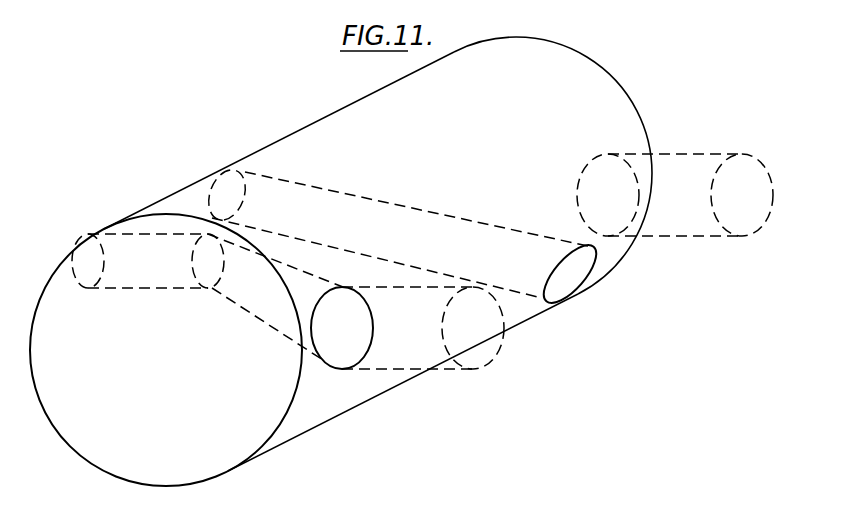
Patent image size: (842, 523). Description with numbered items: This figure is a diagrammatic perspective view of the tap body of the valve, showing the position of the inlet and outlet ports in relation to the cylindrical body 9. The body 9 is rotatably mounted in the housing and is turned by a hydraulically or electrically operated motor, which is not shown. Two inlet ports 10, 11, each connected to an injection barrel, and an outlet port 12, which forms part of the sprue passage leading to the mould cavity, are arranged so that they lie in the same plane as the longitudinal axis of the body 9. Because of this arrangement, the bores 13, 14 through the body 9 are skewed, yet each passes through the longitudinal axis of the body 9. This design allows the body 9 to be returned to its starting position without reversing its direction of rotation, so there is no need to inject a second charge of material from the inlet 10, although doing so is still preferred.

The cylindrical body 9 is at (582, 71).
The inlet port 10 is at (745, 187).
The inlet port 11 is at (478, 357).
The outlet port 12 is at (92, 236).
The bore 13 is at (565, 287).
The bore 14 is at (305, 340).